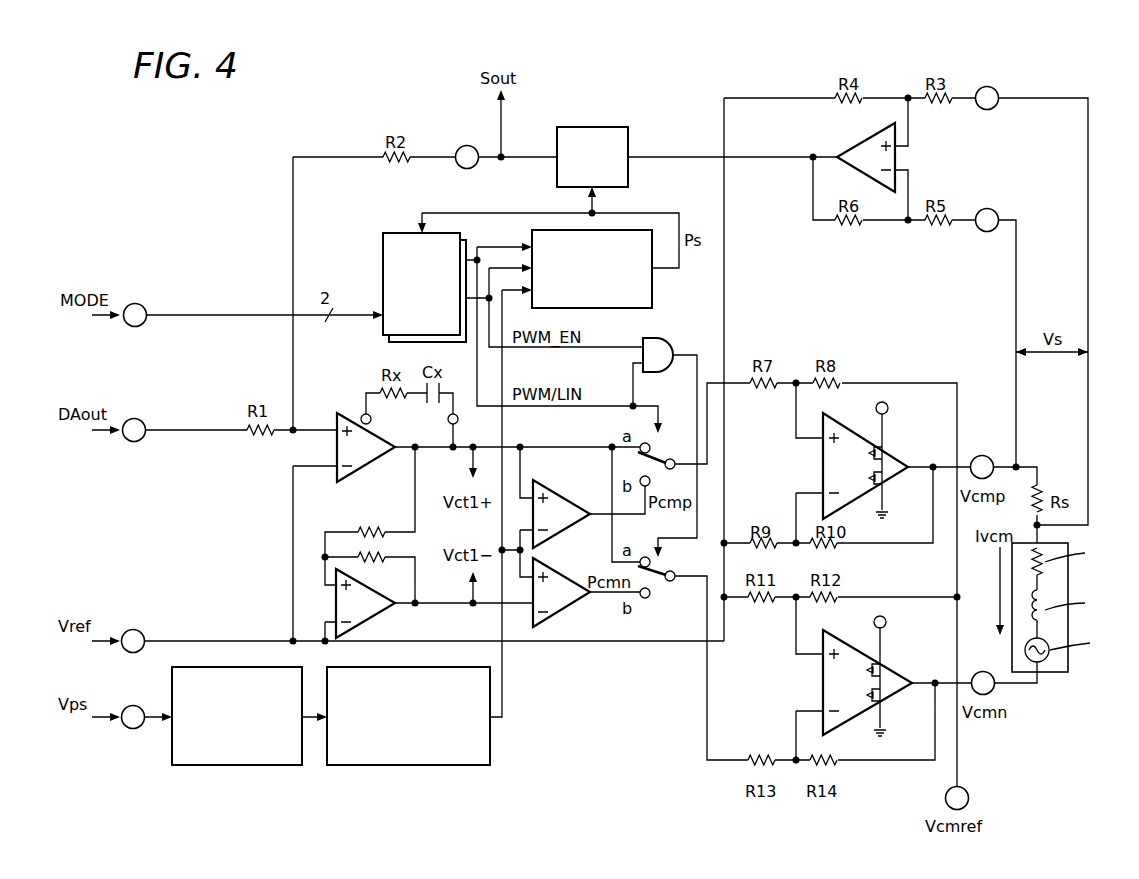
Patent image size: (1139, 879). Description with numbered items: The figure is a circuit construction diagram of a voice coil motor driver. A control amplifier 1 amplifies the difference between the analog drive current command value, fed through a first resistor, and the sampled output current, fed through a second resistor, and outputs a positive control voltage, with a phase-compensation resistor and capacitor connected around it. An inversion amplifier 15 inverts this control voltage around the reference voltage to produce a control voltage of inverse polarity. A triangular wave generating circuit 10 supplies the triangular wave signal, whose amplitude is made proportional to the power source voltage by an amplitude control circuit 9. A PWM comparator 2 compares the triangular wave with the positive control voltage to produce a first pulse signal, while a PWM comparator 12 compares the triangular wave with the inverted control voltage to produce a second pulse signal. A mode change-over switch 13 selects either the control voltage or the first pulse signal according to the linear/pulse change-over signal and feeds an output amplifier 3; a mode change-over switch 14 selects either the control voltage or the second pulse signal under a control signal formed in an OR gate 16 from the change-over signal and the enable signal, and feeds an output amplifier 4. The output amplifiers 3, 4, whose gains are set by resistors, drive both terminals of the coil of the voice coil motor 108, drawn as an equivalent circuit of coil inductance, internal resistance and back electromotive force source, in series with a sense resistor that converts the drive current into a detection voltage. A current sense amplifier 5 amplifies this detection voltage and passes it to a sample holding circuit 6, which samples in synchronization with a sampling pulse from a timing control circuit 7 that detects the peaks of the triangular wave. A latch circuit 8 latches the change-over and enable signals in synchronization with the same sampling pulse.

The control amplifier 1 is at (370, 466).
The PWM comparator 2 is at (573, 492).
The output amplifier 3 is at (823, 470).
The output amplifier 4 is at (823, 688).
The current sense amplifier 5 is at (845, 148).
The sample holding circuit 6 is at (597, 127).
The timing control circuit 7 is at (652, 287).
The latch circuit 8 is at (383, 245).
The amplitude control circuit 9 is at (275, 765).
The triangular wave generating circuit 10 is at (440, 765).
The PWM comparator 12 is at (555, 630).
The mode change-over switch 13 is at (657, 452).
The mode change-over switch 14 is at (655, 585).
The inversion amplifier 15 is at (370, 621).
The OR gate 16 is at (672, 346).
The voice coil motor 108 is at (1050, 672).